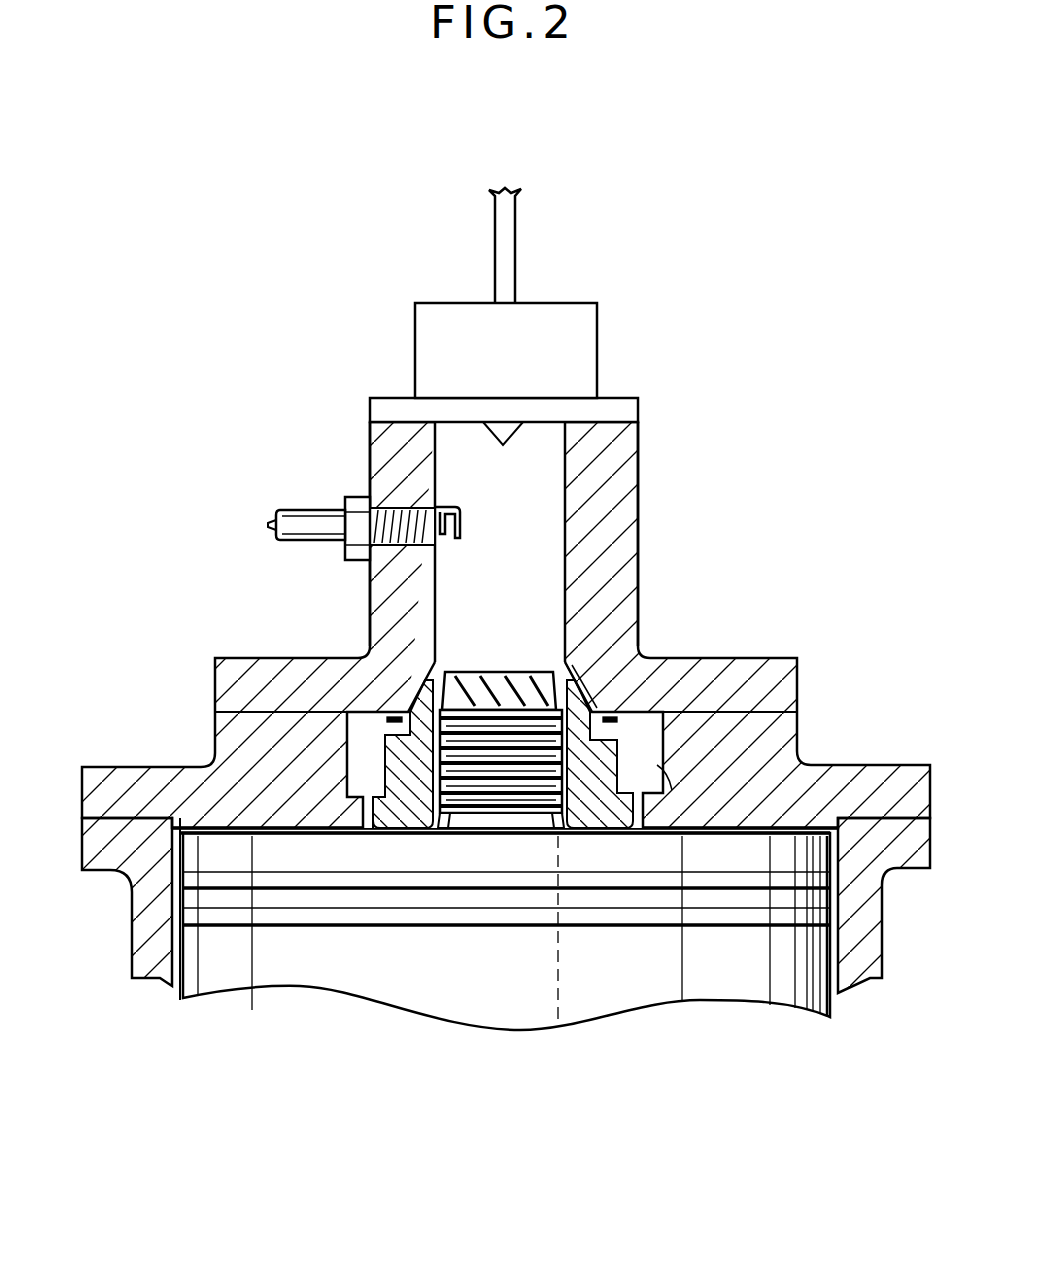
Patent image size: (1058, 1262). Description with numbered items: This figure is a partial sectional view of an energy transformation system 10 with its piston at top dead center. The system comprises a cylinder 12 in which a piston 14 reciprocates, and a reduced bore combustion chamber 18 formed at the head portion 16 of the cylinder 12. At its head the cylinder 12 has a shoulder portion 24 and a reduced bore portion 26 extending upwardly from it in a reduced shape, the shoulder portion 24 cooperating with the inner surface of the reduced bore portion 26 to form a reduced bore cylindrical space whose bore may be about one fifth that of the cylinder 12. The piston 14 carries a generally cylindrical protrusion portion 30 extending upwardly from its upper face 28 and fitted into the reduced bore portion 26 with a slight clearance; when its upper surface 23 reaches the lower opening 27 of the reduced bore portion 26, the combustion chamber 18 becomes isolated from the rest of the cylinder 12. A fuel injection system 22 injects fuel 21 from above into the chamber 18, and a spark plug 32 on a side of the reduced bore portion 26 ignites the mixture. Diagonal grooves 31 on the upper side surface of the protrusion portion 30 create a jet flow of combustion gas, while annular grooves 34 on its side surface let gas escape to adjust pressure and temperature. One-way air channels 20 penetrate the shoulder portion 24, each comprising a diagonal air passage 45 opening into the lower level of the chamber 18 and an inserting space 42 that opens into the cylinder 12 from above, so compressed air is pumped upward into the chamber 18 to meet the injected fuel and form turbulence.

The energy transformation system 10 is at (820, 616).
The cylinder 12 is at (865, 958).
The piston 14 is at (227, 985).
The head portion 16 is at (198, 652).
The reduced bore combustion chamber 18 is at (555, 548).
The one-way air channel 20 is at (368, 828).
The fuel 21 is at (517, 216).
The fuel injection system 22 is at (585, 340).
The upper surface 23 is at (560, 668).
The shoulder portion 24 is at (233, 750).
The reduced bore portion 26 is at (380, 608).
The lower opening 27 is at (652, 722).
The upper face 28 is at (782, 845).
The protrusion portion 30 is at (483, 777).
The grooves 31 is at (528, 668).
The spark plug 32 is at (308, 502).
The annular grooves 34 is at (520, 787).
The inserting space 42 is at (657, 765).
The diagonal air passage 45 is at (428, 690).